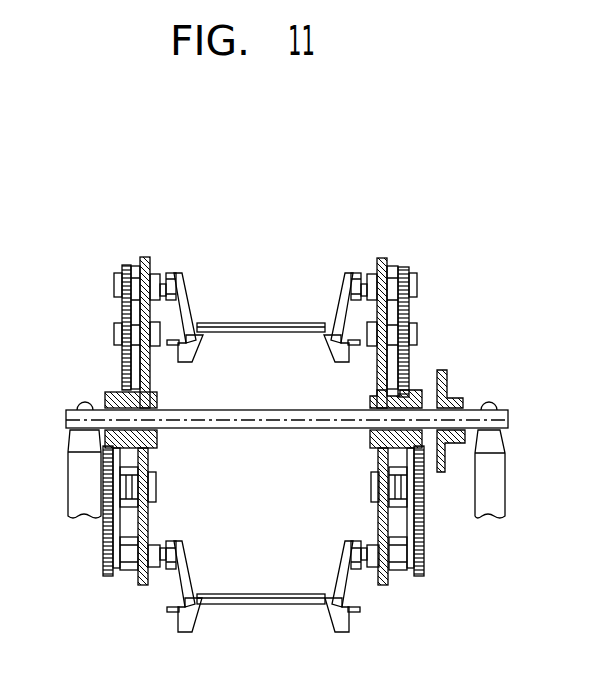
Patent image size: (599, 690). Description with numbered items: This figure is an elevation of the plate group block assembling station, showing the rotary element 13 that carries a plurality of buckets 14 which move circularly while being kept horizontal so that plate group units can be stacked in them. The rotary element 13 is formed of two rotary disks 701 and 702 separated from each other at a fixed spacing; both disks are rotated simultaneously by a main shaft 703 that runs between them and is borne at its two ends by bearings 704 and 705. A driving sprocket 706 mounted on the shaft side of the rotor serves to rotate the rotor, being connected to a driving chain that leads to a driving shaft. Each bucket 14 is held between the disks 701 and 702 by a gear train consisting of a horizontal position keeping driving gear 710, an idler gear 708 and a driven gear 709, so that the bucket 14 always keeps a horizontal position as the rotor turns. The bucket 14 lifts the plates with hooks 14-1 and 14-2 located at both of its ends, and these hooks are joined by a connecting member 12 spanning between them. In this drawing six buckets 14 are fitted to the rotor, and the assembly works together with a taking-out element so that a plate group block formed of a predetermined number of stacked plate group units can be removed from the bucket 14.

The connecting plate 12 is at (264, 322).
The rotary element 13 is at (94, 311).
The bucket 14 is at (263, 334).
The hook 14-1 is at (200, 350).
The hook 14-2 is at (326, 350).
The rotary disk 701 is at (145, 257).
The rotary disk 702 is at (382, 258).
The main shaft 703 is at (265, 429).
The bearing 704 is at (69, 481).
The bearing 705 is at (494, 497).
The driving sprocket 706 is at (460, 398).
The idler gear 708 is at (410, 318).
The driven gear 709 is at (414, 270).
The horizontal position keeping driving gear 710 is at (420, 392).